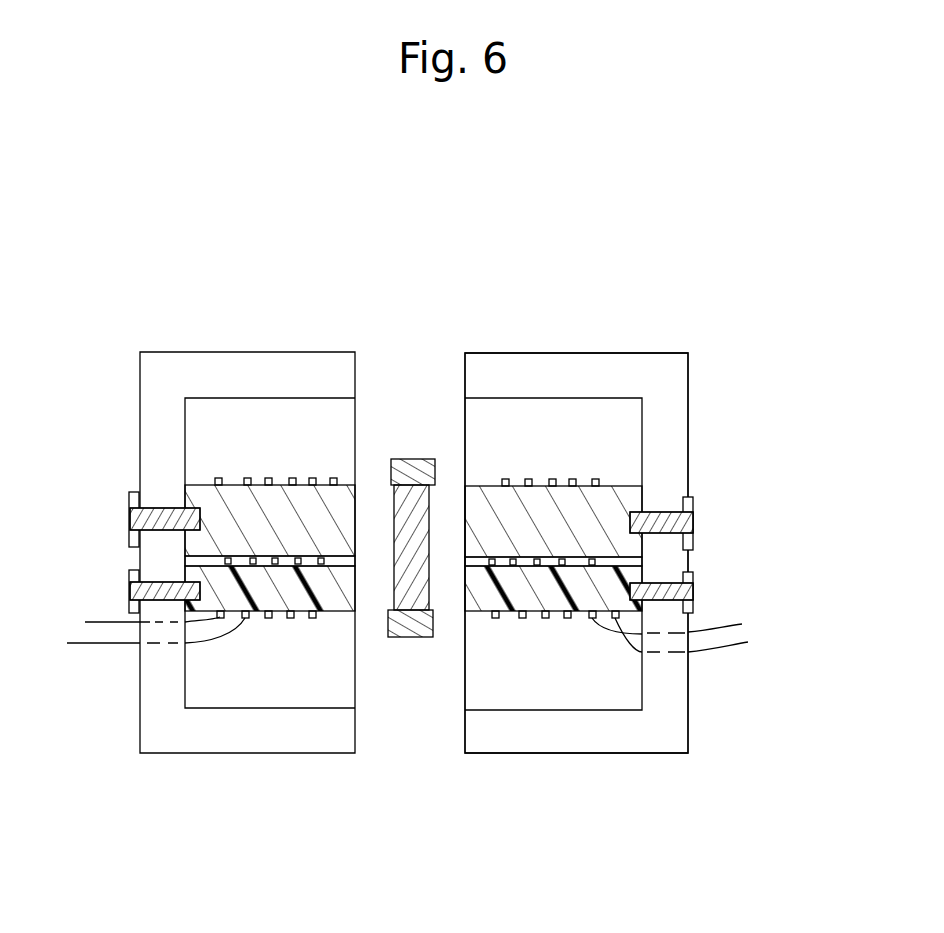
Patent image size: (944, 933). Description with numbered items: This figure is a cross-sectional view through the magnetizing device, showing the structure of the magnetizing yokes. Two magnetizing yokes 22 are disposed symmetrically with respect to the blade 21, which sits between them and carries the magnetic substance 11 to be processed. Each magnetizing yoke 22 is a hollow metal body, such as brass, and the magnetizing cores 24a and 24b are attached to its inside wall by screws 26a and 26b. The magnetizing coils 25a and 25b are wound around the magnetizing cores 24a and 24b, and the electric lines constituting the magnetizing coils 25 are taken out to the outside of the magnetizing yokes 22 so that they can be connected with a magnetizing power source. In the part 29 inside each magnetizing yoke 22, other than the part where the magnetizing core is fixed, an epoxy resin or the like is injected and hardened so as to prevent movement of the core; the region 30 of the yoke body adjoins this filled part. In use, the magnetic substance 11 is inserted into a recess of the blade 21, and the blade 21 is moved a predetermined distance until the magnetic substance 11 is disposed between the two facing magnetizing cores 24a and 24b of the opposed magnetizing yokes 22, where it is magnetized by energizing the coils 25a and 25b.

The magnetizing yoke 22 is at (170, 352).
The part inside the magnetizing yoke 29 is at (293, 412).
The housing arm 30 is at (680, 433).
The magnetizing core 24a is at (640, 497).
The magnetizing core 24b is at (640, 606).
The magnetizing coil 25a is at (575, 482).
The magnetizing coil 25b is at (495, 622).
The magnetizing coil 25 is at (88, 648).
The screw 26a is at (693, 518).
The screw 26b is at (695, 586).
The blade 21 is at (418, 459).
The magnetic substance 11 is at (396, 538).